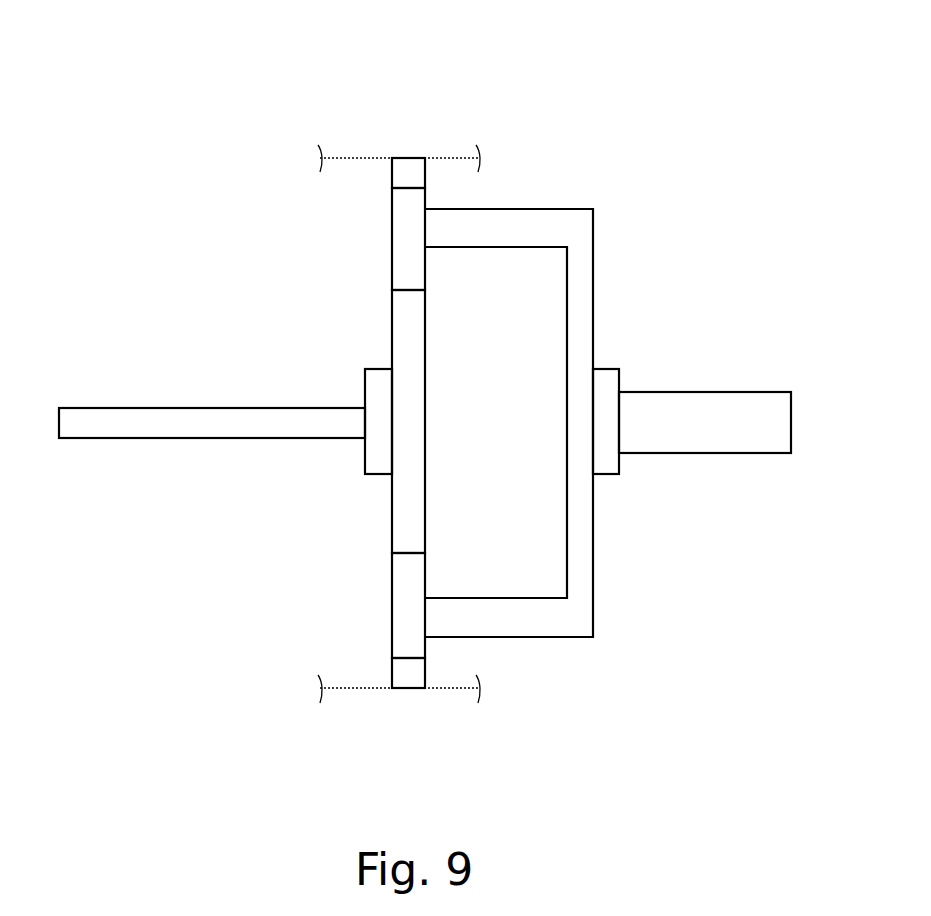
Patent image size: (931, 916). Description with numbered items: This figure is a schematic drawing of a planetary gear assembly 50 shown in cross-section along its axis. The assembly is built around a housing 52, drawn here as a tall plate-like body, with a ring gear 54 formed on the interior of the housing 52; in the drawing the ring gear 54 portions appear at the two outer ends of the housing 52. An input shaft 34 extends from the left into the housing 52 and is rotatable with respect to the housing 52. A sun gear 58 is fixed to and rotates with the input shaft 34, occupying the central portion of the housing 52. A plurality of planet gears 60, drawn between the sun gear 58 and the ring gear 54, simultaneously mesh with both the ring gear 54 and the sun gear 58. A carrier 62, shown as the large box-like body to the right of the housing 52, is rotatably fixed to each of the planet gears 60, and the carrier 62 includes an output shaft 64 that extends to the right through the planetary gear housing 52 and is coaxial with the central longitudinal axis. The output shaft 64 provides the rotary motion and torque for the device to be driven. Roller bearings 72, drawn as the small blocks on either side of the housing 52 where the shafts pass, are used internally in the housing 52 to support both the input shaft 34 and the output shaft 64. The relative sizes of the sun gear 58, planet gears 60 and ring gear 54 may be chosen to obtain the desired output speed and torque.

The planetary gear assembly 50 is at (602, 98).
The housing 52 is at (372, 157).
The ring gear 54 is at (402, 176).
The sun gear 58 is at (405, 492).
The planet gears 60 is at (402, 232).
The carrier 62 is at (580, 238).
The output shaft 64 is at (736, 403).
The roller bearings 72 is at (372, 390).
The input shaft 34 is at (118, 428).